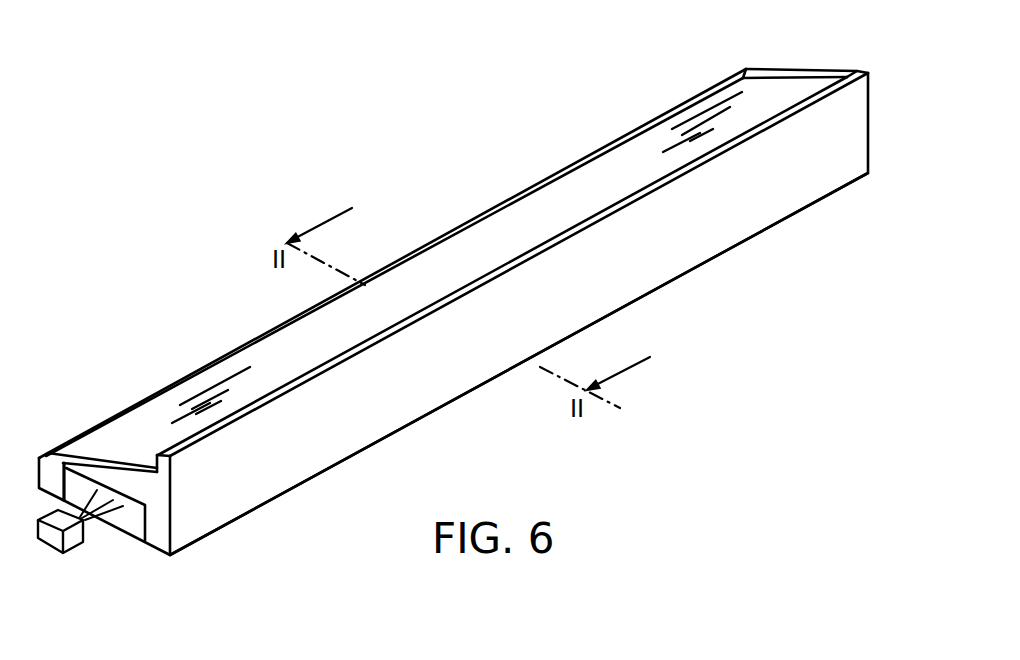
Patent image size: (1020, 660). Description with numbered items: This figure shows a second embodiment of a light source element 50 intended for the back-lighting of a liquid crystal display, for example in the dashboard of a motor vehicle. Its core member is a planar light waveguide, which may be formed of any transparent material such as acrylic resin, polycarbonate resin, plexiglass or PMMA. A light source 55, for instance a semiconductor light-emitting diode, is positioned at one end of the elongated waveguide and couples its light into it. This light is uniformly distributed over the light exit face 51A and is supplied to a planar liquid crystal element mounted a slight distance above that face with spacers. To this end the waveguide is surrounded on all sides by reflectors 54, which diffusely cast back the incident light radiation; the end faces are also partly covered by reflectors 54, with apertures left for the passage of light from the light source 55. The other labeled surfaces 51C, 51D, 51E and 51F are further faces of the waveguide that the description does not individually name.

The light source element 50 is at (423, 169).
The light exit face 51A is at (272, 355).
The side surface 51C is at (672, 260).
The top surface 51D is at (540, 180).
The light entrance end face 51E is at (158, 535).
The far end wall 51F is at (791, 69).
The reflectors 54 is at (383, 413).
The light source 55 is at (47, 538).